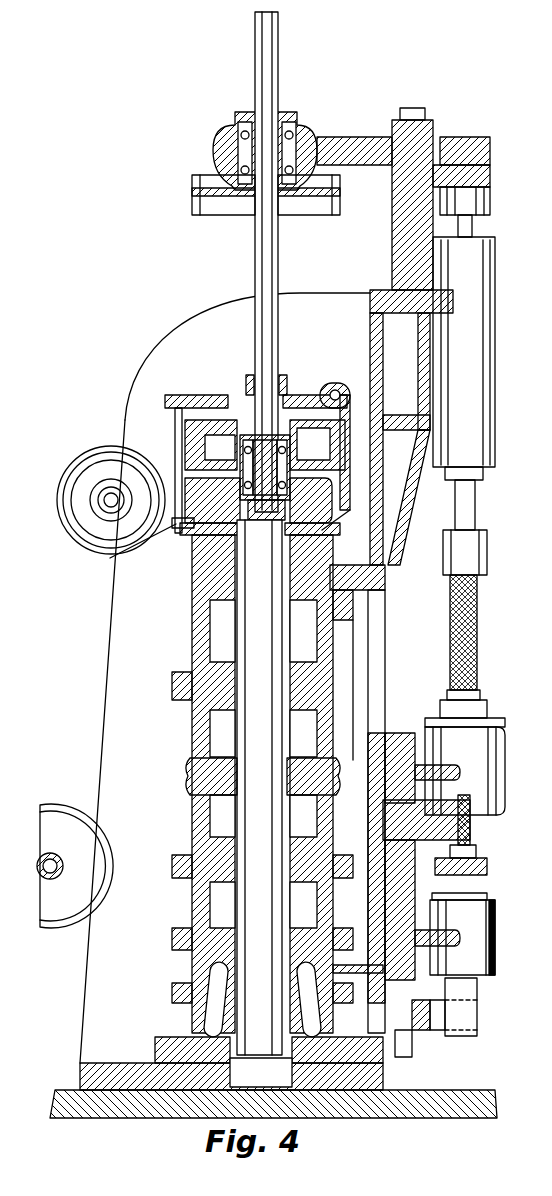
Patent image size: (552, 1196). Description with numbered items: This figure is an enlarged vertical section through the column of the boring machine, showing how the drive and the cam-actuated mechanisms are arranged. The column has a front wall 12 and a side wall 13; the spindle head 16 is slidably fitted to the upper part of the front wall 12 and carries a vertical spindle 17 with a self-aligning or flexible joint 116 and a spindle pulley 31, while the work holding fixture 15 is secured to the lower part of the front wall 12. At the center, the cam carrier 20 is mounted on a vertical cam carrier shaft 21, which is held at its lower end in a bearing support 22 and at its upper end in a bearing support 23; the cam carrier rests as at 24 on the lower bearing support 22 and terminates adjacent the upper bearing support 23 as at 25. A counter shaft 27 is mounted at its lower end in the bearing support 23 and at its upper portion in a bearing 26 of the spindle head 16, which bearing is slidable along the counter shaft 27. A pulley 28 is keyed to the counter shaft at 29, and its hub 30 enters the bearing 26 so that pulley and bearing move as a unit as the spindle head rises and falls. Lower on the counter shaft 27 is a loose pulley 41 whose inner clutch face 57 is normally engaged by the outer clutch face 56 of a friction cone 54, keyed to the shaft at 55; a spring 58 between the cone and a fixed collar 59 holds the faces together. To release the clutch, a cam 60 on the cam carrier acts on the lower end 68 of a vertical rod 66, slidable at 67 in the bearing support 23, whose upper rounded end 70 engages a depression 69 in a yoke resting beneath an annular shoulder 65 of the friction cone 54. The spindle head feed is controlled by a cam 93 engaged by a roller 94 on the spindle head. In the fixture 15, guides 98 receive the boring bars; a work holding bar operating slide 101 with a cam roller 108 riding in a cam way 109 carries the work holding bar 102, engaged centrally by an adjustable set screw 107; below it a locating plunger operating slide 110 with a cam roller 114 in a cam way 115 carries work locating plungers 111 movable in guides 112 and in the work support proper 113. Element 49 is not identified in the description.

The front wall 12 is at (386, 668).
The side wall 13 is at (302, 302).
The work holding fixture 15 is at (418, 886).
The spindle head 16 is at (378, 305).
The vertical spindles 17 is at (476, 497).
The cam carrier 20 is at (193, 618).
The cam carrier shaft 21 is at (255, 730).
The bearing support 22 is at (228, 1010).
The bearing support 23 is at (200, 536).
The resting point of cam carrier 24 is at (222, 978).
The upper end of cam carrier 25 is at (322, 530).
The bearing 26 is at (330, 140).
The counter shaft 27 is at (255, 330).
The pulley 28 is at (191, 200).
The key 29 is at (262, 198).
The hub 30 is at (235, 157).
The pulleys 31 is at (492, 200).
The loose pulley 41 is at (195, 440).
The ring 49 is at (188, 781).
The friction cone 54 is at (322, 430).
The key 55 is at (268, 412).
The outer clutch face 56 is at (342, 440).
The inner clutch face 57 is at (317, 445).
The spring 58 is at (249, 383).
The collar 59 is at (272, 372).
The cam 60 is at (176, 528).
The annular shoulder 65 is at (283, 398).
The vertical rod 66 is at (185, 447).
The sliding point of rod 67 is at (118, 470).
The lower end of rod 68 is at (130, 547).
The depression 69 is at (176, 412).
The upper rounded end 70 is at (200, 400).
The cam 93 is at (173, 690).
The roller 94 is at (356, 566).
The guides 98 is at (485, 757).
The work holding bar operating slide 101 is at (392, 735).
The work holding bar 102 is at (478, 866).
The adjustable set screw 107 is at (485, 835).
The cam roller 108 is at (368, 770).
The cam way 109 is at (180, 840).
The locating plunger operating slide 110 is at (405, 1040).
The work locating plungers 111 is at (462, 993).
The guides 112 is at (478, 931).
The work support proper 113 is at (492, 897).
The cam roller 114 is at (345, 945).
The cam way 115 is at (180, 972).
The flexible joint 116 is at (487, 554).